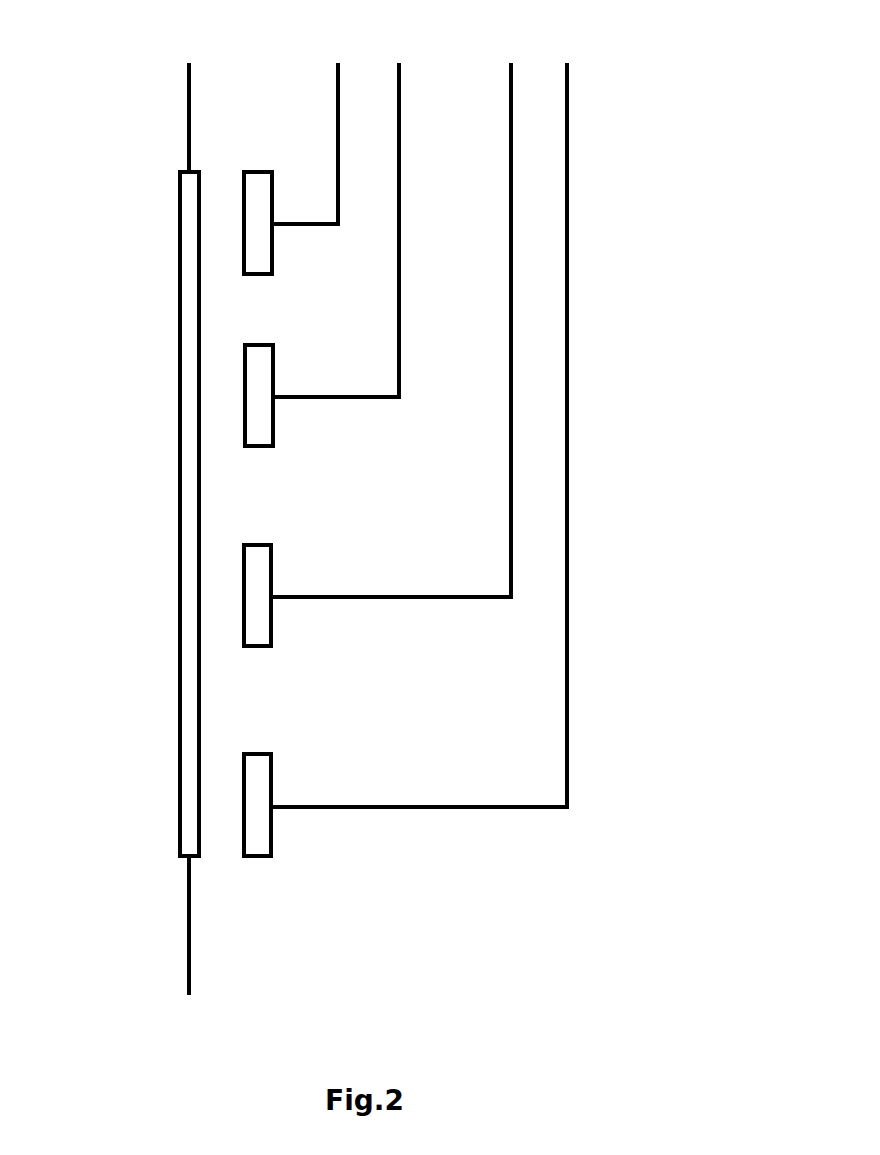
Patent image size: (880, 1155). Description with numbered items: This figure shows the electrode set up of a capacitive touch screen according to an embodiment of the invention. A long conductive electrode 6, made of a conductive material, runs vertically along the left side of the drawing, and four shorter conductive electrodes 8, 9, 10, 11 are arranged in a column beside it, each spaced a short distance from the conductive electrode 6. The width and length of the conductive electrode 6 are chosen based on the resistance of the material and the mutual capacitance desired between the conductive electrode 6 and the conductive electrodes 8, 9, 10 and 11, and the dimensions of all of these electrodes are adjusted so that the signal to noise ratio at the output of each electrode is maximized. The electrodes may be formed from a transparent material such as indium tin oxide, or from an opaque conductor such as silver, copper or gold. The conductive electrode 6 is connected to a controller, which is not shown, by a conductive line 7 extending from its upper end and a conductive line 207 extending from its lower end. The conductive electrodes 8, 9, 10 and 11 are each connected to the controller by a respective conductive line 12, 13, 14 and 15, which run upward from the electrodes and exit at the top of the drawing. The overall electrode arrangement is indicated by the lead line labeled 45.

The conductive electrode 6 is at (178, 728).
The conductive line 7 is at (176, 112).
The conductive line 207 is at (188, 943).
The conductive electrode 8 is at (273, 775).
The conductive electrode 9 is at (270, 565).
The conductive electrode 10 is at (273, 360).
The conductive electrode 11 is at (239, 221).
The conductive line 12 is at (426, 420).
The conductive line 13 is at (397, 315).
The conductive line 14 is at (343, 216).
The conductive line 15 is at (312, 129).
The sensor arrangement 45 is at (628, 275).